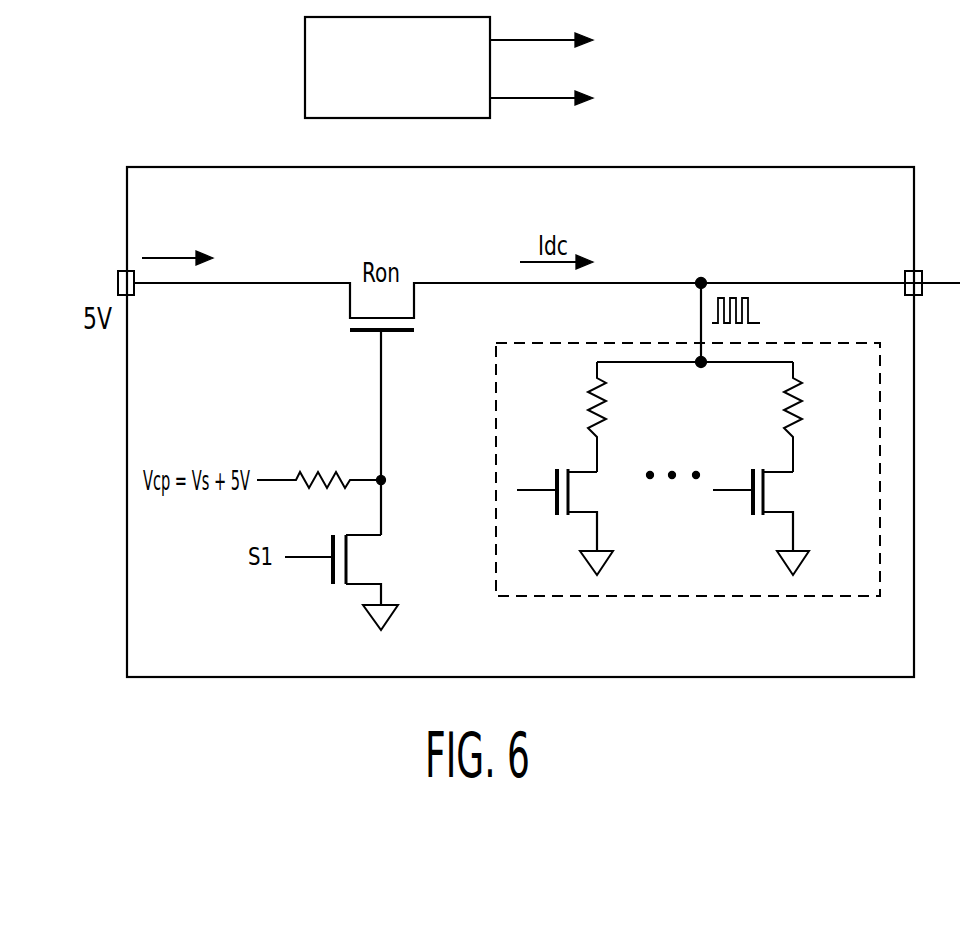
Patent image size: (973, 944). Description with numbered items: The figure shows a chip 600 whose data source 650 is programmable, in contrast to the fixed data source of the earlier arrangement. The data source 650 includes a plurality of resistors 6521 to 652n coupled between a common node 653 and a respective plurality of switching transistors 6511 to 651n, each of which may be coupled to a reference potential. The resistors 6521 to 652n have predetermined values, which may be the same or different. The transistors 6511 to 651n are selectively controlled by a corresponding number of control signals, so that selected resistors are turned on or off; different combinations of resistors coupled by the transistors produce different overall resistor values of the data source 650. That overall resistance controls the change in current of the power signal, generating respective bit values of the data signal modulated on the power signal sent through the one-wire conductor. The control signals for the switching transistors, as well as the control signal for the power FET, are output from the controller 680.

The controller 680 is at (305, 57).
The chip 600 is at (830, 167).
The common node 653 is at (693, 358).
The data source 650 is at (588, 597).
The resistor 6521 is at (605, 402).
The resistor 652n is at (802, 402).
The switching transistor 6511 is at (572, 492).
The switching transistor 651n is at (768, 497).